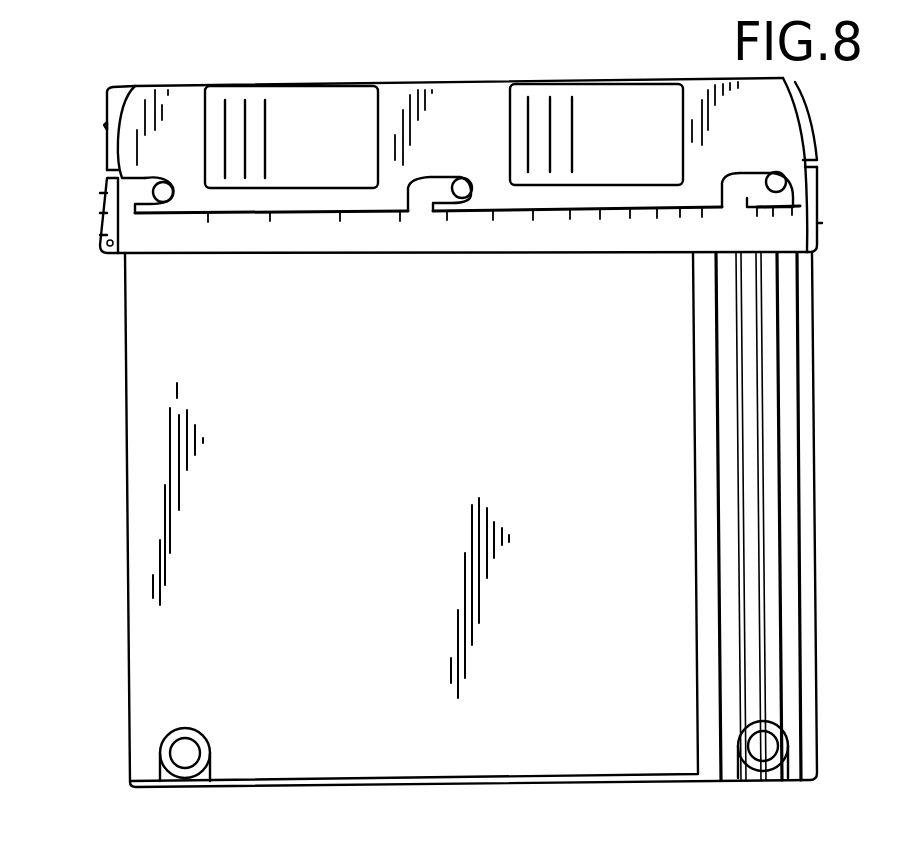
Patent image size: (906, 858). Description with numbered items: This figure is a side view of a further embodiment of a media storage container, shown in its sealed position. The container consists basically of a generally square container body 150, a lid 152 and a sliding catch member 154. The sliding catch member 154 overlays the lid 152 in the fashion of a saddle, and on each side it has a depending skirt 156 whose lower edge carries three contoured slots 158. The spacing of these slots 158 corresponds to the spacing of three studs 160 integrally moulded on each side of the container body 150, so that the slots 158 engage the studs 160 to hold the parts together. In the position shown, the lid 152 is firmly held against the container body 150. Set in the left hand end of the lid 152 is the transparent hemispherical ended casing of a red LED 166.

The container body 150 is at (140, 638).
The lid 152 is at (112, 157).
The sliding catch member 154 is at (397, 87).
The depending skirt 156 is at (292, 203).
The contoured slot 158 is at (125, 198).
The stud 160 is at (172, 197).
The red LED 166 is at (107, 125).